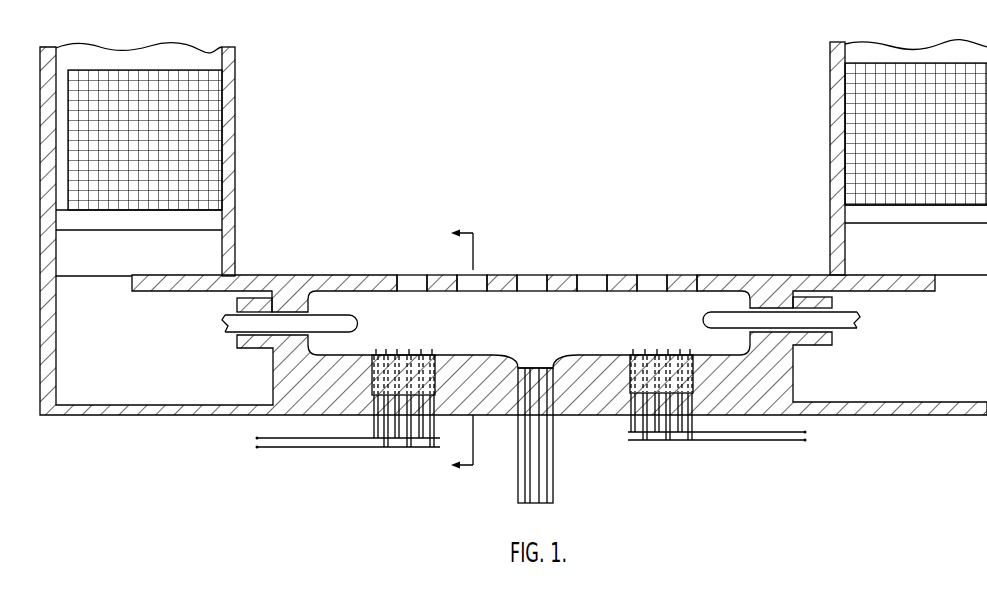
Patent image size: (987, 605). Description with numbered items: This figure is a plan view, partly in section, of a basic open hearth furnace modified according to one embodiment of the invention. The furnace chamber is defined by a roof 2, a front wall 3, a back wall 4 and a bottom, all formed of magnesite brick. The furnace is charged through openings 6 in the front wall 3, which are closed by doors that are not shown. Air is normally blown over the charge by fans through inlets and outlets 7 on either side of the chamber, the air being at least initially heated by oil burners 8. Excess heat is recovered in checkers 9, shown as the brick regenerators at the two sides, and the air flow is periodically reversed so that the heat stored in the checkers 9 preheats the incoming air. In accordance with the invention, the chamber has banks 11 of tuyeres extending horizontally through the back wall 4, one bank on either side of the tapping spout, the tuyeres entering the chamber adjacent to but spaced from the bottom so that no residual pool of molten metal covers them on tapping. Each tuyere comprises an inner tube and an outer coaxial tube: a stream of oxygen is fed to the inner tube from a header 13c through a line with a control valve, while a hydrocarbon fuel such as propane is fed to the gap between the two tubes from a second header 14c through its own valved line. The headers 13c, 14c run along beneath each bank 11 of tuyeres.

The roof 2 is at (453, 352).
The front wall 3 is at (498, 280).
The back wall 4 is at (575, 408).
The openings 6 is at (588, 283).
The inlets and outlets 7 is at (258, 334).
The oil burners 8 is at (355, 325).
The checkers 9 is at (205, 97).
The banks of tuyeres 11 is at (428, 356).
The header 13c is at (317, 439).
The header 14c is at (266, 448).